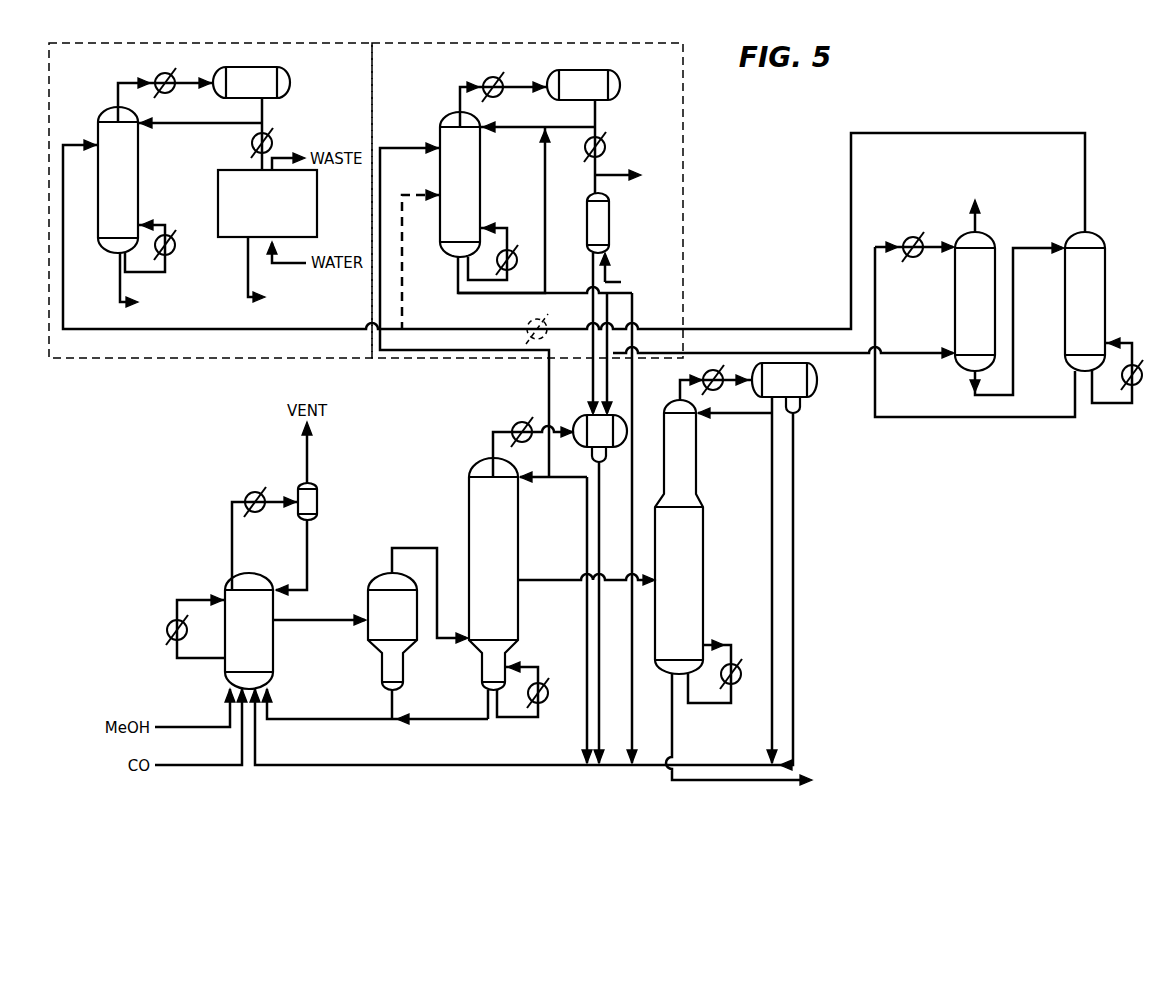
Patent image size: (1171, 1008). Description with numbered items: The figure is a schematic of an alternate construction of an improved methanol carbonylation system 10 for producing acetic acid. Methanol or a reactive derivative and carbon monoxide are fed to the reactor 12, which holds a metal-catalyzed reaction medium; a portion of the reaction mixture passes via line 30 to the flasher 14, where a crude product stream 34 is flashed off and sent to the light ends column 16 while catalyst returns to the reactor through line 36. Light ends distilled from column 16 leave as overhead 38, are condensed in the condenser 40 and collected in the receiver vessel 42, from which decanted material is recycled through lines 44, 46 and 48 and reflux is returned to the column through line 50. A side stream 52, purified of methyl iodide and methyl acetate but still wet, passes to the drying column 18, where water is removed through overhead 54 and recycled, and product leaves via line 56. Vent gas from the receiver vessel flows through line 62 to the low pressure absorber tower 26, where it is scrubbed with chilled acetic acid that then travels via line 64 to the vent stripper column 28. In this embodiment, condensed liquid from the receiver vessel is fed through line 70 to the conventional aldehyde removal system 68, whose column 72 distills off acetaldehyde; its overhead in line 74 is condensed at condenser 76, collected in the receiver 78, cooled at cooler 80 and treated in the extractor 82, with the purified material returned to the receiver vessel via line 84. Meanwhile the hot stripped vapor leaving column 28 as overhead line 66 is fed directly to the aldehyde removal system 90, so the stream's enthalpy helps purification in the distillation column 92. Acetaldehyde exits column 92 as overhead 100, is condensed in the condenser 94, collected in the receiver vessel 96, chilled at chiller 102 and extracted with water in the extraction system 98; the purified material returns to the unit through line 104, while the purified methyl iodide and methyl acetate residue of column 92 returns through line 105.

The carbonylation system 10 is at (177, 503).
The reactor 12 is at (273, 668).
The flasher 14 is at (411, 652).
The light ends column 16 is at (469, 499).
The drying column 18 is at (703, 583).
The low pressure absorber tower 26 is at (955, 293).
The vent stripper column 28 is at (1105, 293).
The line 30 is at (319, 619).
The crude product stream 34 is at (414, 548).
The line 36 is at (354, 722).
The overhead 38 is at (493, 449).
The condenser 40 is at (515, 421).
The receiver vessel 42 is at (609, 456).
The line 44 is at (584, 536).
The line 46 is at (601, 536).
The line 48 is at (514, 768).
The line 50 is at (549, 486).
The side stream 52 is at (575, 584).
The overhead 54 is at (678, 393).
The line 56 is at (718, 783).
The line 62 is at (745, 354).
The line 64 is at (1013, 339).
The line 66 is at (876, 133).
The aldehyde removal system 68 is at (402, 121).
The line 70 is at (383, 186).
The column 72 is at (480, 192).
The line 74 is at (460, 106).
The condenser 76 is at (506, 101).
The receiver 78 is at (620, 92).
The cooler 80 is at (606, 152).
The extractor 82 is at (610, 230).
The line 84 is at (593, 273).
The aldehyde removal system 90 is at (83, 121).
The distillation column 92 is at (138, 190).
The condenser 94 is at (177, 97).
The receiver vessel 96 is at (290, 88).
The extractor 98 is at (317, 204).
The overhead 100 is at (118, 92).
The chiller 102 is at (274, 147).
The line 104 is at (248, 266).
The line 105 is at (120, 288).